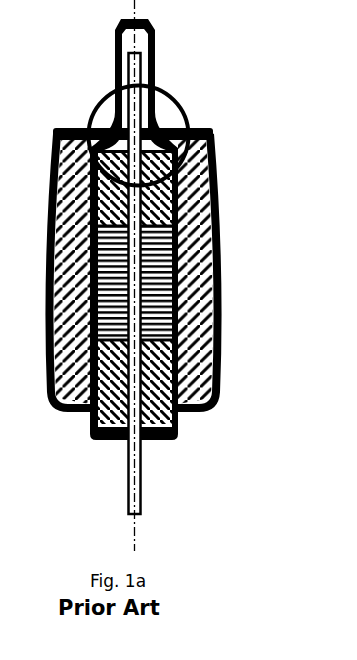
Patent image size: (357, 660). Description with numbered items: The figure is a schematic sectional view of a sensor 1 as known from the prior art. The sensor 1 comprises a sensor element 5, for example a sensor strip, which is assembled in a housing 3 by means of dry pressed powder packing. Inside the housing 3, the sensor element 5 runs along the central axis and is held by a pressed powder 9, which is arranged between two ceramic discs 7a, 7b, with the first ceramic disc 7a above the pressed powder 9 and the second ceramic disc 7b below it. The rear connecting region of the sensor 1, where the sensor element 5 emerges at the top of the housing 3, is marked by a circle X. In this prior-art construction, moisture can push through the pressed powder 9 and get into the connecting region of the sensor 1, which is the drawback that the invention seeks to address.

The sensor 1 is at (183, 275).
The circle marking the rear connecting region X is at (197, 120).
The ceramic disc 7a is at (212, 175).
The housing 3 is at (223, 210).
The pressed powder 9 is at (218, 268).
The sensor element 5 is at (220, 328).
The ceramic disc 7b is at (220, 365).